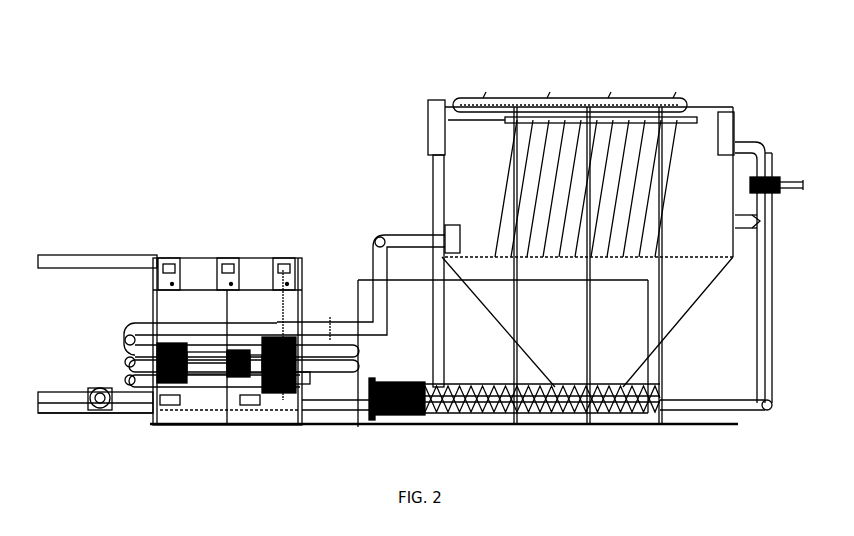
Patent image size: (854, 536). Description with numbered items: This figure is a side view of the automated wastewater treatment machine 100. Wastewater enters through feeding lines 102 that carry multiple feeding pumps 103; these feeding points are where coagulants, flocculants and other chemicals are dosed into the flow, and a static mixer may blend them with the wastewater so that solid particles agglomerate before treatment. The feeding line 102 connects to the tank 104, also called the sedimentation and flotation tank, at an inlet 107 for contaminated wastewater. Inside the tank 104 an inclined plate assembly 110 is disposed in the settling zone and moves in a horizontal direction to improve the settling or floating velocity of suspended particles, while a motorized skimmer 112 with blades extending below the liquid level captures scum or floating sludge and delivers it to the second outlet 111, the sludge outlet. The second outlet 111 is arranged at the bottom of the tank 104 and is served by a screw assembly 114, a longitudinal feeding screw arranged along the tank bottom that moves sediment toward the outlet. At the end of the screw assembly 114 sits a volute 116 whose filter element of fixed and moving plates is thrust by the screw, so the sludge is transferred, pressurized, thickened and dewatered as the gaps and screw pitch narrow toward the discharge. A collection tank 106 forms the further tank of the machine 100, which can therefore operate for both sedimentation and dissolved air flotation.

The machine 100 is at (313, 142).
The feeding line 102 is at (357, 323).
The feeding pumps 103 is at (168, 257).
The tank 104 is at (702, 148).
The collection tank 106 is at (412, 293).
The inlet 107 is at (73, 398).
The inclined plate assembly 110 is at (645, 148).
The second outlet 111 is at (62, 408).
The motorized skimmer 112 is at (560, 105).
The screw assembly 114 is at (517, 412).
The volute 116 is at (395, 418).